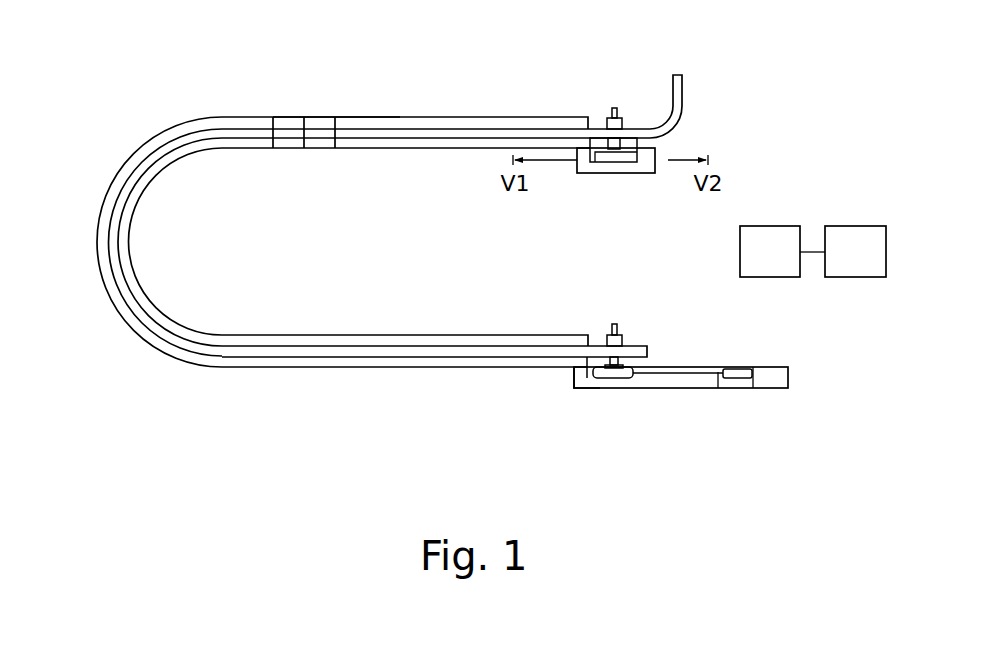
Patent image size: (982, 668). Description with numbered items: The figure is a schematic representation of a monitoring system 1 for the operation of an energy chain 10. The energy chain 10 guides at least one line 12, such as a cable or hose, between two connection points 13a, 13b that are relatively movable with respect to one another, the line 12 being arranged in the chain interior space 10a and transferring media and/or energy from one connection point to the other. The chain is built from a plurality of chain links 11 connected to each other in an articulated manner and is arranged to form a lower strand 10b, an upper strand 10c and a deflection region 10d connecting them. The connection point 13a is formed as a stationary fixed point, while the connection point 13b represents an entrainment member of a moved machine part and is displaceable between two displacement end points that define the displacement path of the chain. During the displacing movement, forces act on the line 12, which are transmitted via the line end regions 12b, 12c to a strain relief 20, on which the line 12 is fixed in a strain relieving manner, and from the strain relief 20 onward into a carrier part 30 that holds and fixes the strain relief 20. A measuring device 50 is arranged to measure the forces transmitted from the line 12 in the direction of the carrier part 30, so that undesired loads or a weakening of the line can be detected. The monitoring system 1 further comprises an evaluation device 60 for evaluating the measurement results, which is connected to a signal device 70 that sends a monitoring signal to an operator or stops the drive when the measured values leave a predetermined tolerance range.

The monitoring system 1 is at (700, 320).
The energy chain 10 is at (342, 243).
The chain interior space 10a is at (472, 117).
The lower strand 10b is at (315, 372).
The upper strand 10c is at (357, 110).
The deflection region 10d is at (106, 300).
The chain links 11 is at (287, 123).
The line 12 is at (372, 180).
The line end region 12b is at (600, 346).
The line end region 12c is at (592, 128).
The connection point 13a is at (555, 400).
The connection point 13b is at (654, 90).
The strain relief 20 is at (613, 103).
The carrier part 30 is at (615, 174).
The measuring device 50 is at (738, 380).
The evaluation device 60 is at (733, 367).
The signal device 70 is at (855, 251).